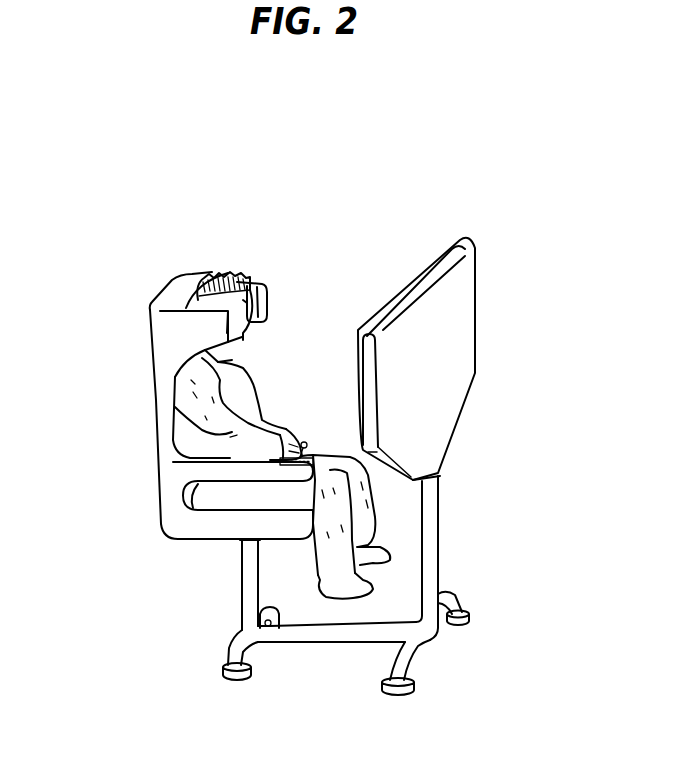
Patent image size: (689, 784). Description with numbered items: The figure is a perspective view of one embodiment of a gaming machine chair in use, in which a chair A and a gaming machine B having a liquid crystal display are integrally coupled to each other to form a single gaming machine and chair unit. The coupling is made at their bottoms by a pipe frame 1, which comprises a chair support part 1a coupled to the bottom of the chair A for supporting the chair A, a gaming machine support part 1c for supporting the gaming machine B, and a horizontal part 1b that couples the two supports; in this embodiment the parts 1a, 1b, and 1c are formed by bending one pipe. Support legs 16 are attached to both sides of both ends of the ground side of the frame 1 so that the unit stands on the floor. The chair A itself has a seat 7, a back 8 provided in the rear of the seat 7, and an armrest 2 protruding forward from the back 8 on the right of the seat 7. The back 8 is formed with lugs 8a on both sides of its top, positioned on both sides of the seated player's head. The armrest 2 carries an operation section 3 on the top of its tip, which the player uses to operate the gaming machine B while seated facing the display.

The pipe frame 1 is at (337, 659).
The chair support part 1a is at (243, 568).
The horizontal part 1b is at (358, 644).
The gaming machine support part 1c is at (440, 498).
The armrest 2 is at (190, 470).
The operation section 3 is at (325, 427).
The seat 7 is at (195, 528).
The back 8 is at (148, 313).
The lug 8a is at (258, 281).
The support leg 16 is at (233, 640).
The chair A is at (128, 344).
The gaming machine B is at (514, 255).